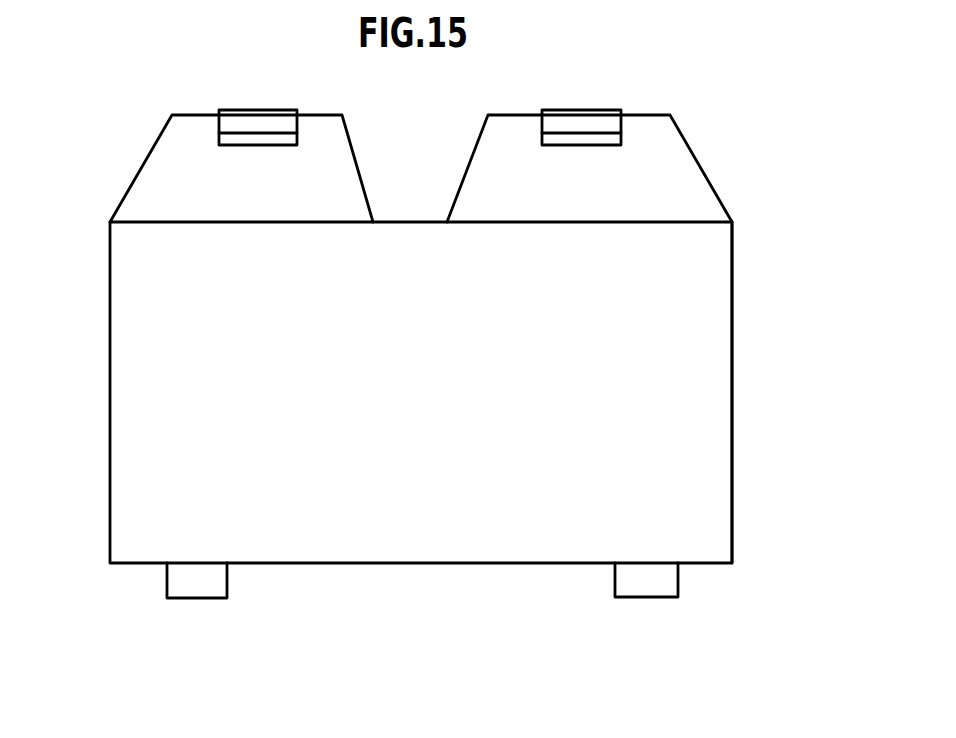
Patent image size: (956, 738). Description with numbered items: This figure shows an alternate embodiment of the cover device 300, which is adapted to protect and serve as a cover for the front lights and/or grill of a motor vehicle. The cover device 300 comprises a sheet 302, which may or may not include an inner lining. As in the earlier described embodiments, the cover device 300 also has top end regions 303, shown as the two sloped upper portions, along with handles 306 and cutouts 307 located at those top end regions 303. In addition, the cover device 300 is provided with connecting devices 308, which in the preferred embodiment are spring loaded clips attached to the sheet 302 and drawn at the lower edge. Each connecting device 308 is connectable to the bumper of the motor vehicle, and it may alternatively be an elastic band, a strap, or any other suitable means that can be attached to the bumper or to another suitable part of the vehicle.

The cover device 300 is at (100, 523).
The sheet 302 is at (733, 422).
The top end regions 303 is at (133, 180).
The handles 306 is at (262, 122).
The cutouts 307 is at (242, 140).
The connecting device 308 is at (615, 589).